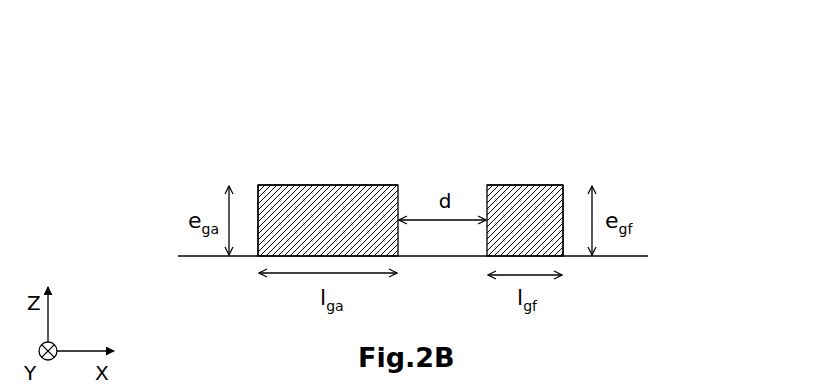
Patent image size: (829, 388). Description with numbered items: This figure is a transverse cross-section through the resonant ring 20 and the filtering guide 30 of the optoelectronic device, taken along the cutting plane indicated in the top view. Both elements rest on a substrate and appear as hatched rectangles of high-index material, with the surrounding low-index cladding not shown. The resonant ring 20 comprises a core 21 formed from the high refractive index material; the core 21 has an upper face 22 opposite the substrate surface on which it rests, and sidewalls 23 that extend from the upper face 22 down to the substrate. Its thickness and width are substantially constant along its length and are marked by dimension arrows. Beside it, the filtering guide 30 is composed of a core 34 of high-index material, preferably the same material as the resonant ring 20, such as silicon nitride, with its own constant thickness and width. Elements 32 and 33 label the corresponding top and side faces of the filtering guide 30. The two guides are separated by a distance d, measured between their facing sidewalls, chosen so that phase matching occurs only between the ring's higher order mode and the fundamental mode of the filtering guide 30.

The resonant ring 20 is at (291, 146).
The core 21 is at (305, 203).
The upper face 22 is at (328, 185).
The sidewalls 23 is at (258, 220).
The filtering waveguide 30 is at (548, 146).
The top face of second gate 32 is at (525, 185).
The side face of second gate 33 is at (563, 220).
The core 34 is at (503, 205).